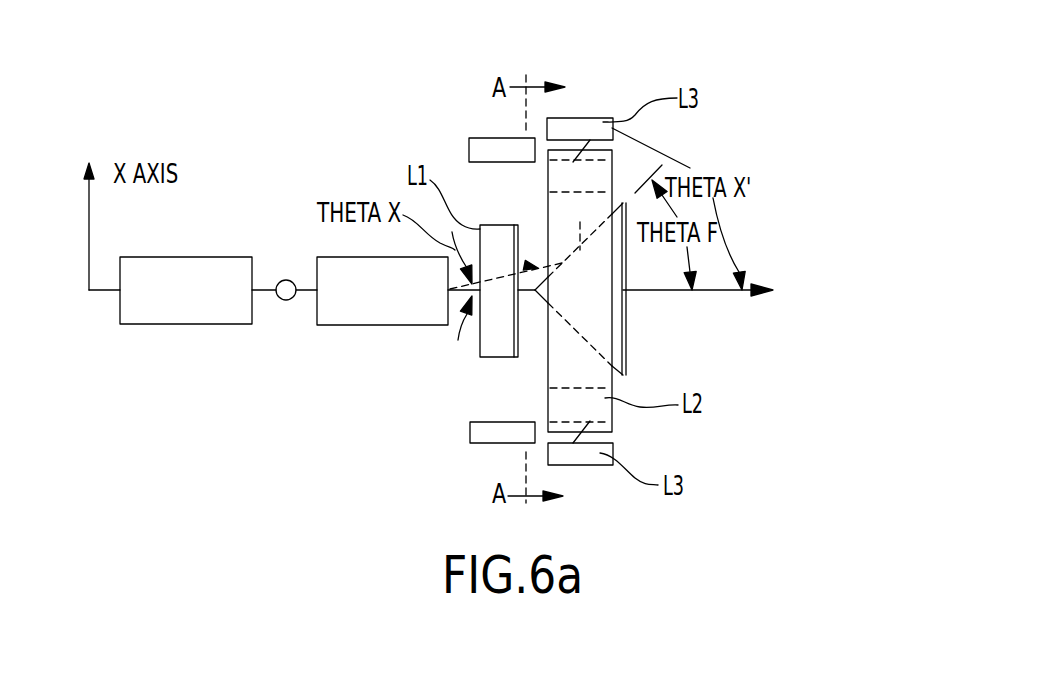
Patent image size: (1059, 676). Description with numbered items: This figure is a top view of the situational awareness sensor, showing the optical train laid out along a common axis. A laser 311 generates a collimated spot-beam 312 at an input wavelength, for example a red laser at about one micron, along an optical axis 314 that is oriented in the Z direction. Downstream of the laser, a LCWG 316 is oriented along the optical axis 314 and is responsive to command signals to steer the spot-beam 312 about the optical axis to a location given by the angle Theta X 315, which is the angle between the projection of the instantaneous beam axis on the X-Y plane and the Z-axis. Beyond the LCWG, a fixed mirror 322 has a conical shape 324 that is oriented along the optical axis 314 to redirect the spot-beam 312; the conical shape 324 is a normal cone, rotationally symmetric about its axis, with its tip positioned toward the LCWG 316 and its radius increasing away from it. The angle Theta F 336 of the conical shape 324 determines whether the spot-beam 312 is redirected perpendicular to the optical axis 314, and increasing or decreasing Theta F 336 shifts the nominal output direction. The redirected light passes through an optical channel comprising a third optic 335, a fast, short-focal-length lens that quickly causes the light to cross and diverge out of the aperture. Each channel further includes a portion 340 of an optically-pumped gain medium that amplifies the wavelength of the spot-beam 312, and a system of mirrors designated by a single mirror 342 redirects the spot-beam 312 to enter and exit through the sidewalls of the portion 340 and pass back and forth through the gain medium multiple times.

The laser 311 is at (187, 324).
The spot-beam 312 is at (286, 300).
The LCWG 316 is at (370, 325).
The Theta X 315 is at (528, 266).
The conical shape 324 is at (578, 332).
The fixed mirror 322 is at (625, 342).
The optical axis 314 is at (722, 292).
The Theta F 336 is at (688, 253).
The optic L3 335 is at (582, 127).
The mirror 342 is at (575, 157).
The portion of optically-pumped gain medium 340 is at (469, 147).